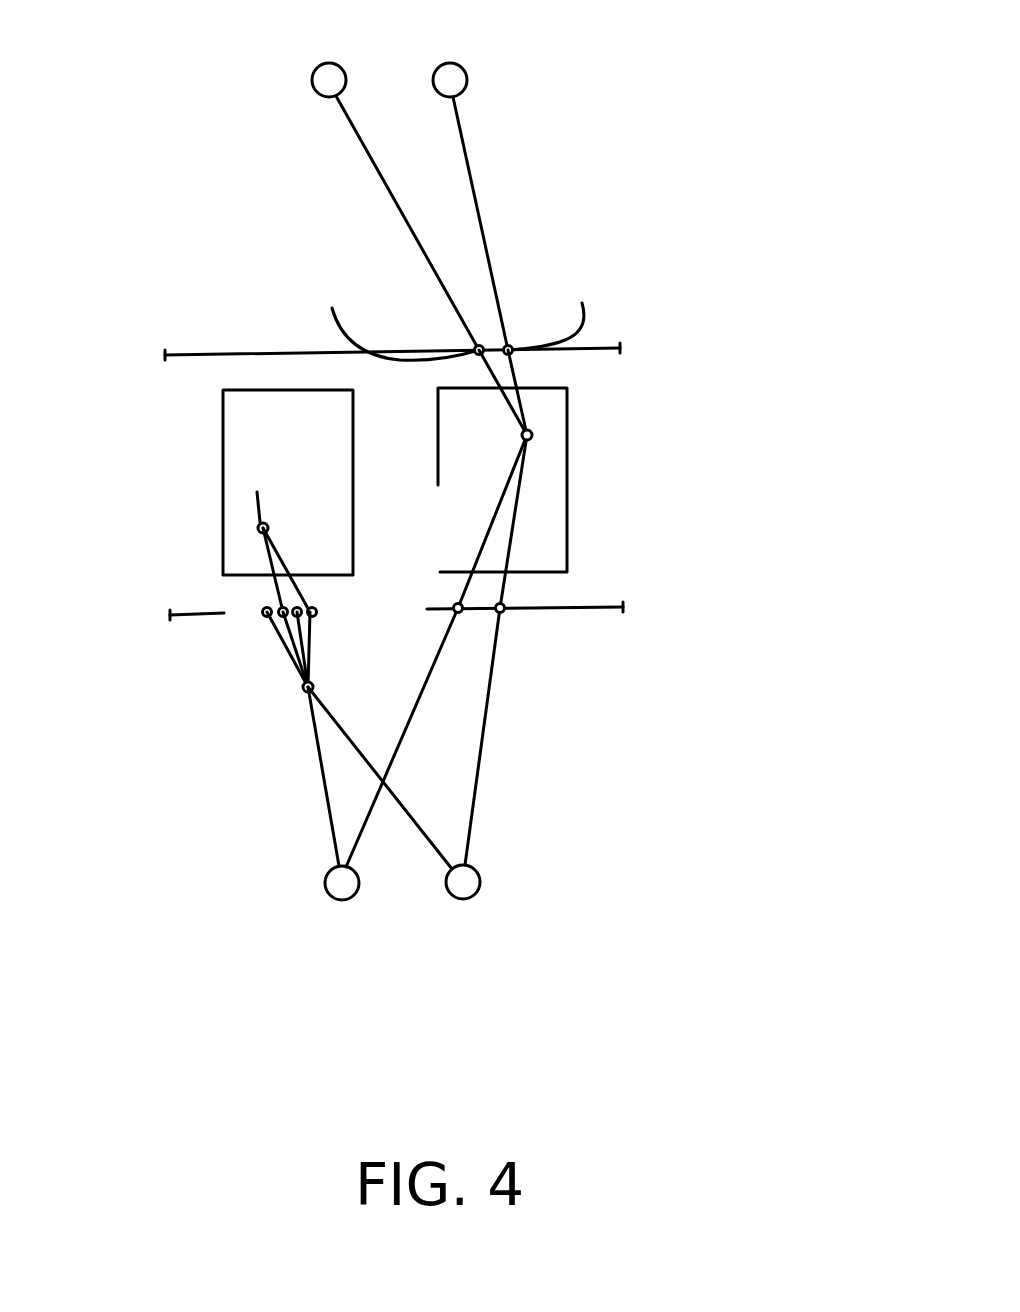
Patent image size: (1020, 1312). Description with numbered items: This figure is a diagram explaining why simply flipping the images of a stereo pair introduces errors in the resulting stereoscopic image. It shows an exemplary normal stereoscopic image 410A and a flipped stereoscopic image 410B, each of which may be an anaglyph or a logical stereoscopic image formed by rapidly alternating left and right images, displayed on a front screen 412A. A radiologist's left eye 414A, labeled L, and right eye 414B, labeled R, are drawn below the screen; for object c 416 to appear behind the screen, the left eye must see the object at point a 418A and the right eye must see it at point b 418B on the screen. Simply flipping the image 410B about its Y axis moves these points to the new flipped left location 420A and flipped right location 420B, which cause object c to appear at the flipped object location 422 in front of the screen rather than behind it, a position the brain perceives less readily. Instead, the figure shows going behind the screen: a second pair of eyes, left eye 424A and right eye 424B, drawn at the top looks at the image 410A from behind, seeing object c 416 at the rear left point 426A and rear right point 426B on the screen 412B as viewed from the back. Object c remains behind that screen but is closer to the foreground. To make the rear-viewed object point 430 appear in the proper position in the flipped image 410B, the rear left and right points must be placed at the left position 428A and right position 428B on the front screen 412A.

The normal stereoscopic image 410A is at (580, 527).
The flipped stereoscopic image 410B is at (212, 473).
The front screen 412A is at (567, 618).
The screen viewed from behind 412B is at (630, 347).
The left eye 414A is at (333, 893).
The right eye 414B is at (478, 890).
The object c 416 is at (540, 437).
The point a 418A is at (452, 640).
The point b 418B is at (507, 620).
The point a_f 420A is at (318, 612).
The point b_f 420B is at (240, 622).
The location c_f 422 is at (270, 688).
The left eye of second pair 424A is at (468, 80).
The right eye of second pair 424B is at (309, 82).
The point a_fr 426A is at (585, 296).
The point b_fr 426B is at (389, 302).
The position of a_fr on front screen 428A is at (217, 607).
The position of b_fr on front screen 428B is at (362, 608).
The c_fr 430 is at (284, 522).